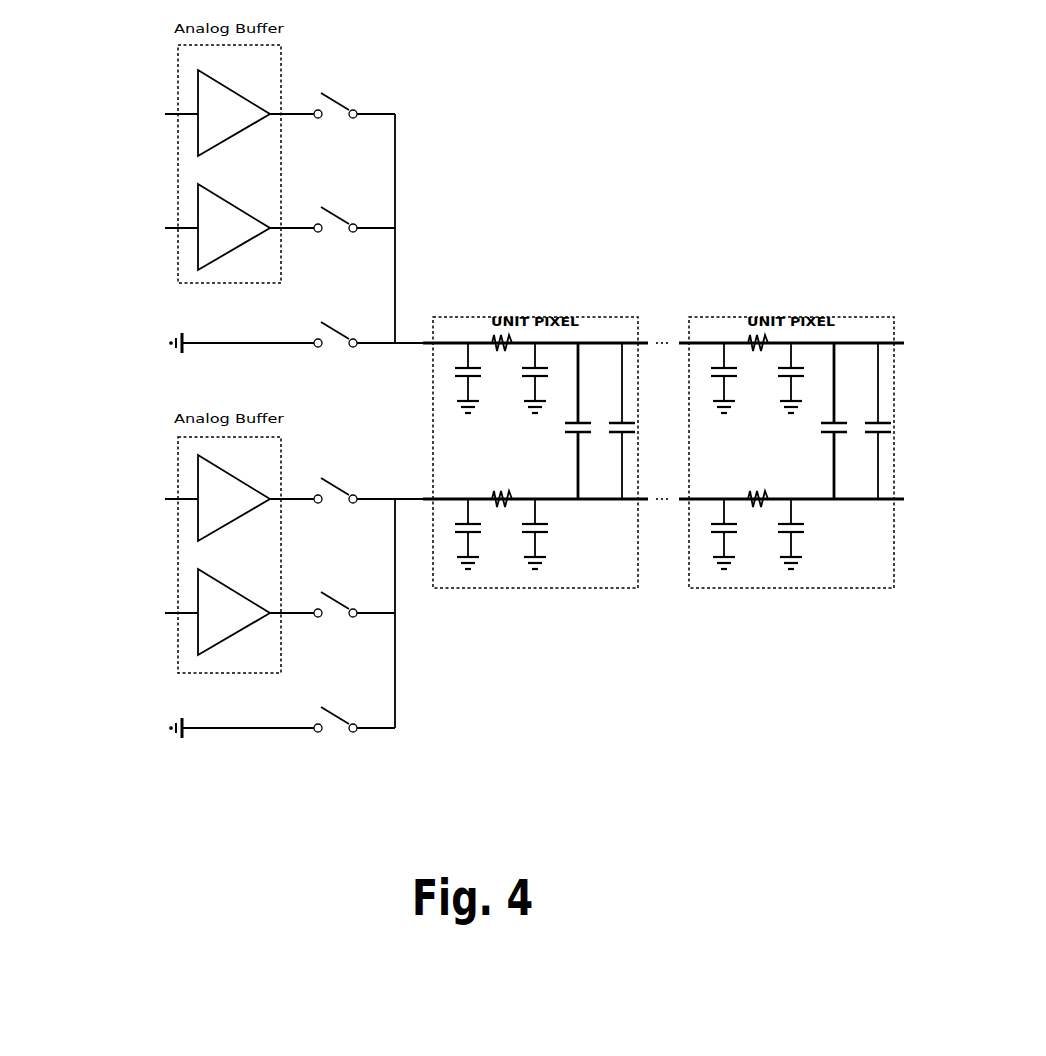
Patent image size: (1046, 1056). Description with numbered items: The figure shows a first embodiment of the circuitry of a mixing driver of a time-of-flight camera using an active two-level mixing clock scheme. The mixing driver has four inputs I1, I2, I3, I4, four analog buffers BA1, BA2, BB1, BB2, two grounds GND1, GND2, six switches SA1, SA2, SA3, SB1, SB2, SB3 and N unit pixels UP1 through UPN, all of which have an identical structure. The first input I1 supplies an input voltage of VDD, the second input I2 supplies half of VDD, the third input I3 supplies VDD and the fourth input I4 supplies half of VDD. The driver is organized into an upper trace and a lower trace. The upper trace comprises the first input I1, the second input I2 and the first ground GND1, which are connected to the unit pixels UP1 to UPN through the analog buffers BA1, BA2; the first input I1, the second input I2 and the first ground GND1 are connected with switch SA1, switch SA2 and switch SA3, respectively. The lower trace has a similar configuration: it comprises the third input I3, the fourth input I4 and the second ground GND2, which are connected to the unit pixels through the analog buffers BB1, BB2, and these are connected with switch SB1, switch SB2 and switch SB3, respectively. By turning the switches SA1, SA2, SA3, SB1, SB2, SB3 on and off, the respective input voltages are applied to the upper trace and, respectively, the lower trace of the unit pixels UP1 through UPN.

The first input I1 is at (120, 115).
The second input I2 is at (120, 229).
The third input I3 is at (120, 500).
The fourth input I4 is at (120, 614).
The analog buffer BA1 is at (234, 113).
The analog buffer BA2 is at (234, 227).
The analog buffer BB1 is at (234, 498).
The analog buffer BB2 is at (234, 612).
The switch SA1 is at (336, 93).
The switch SA2 is at (336, 207).
The switch SA3 is at (336, 321).
The switch SB1 is at (336, 478).
The switch SB2 is at (336, 592).
The switch SB3 is at (336, 707).
The first ground GND1 is at (204, 343).
The second ground GND2 is at (207, 728).
The unit pixel UP1 is at (608, 317).
The unit pixel UPN is at (882, 317).